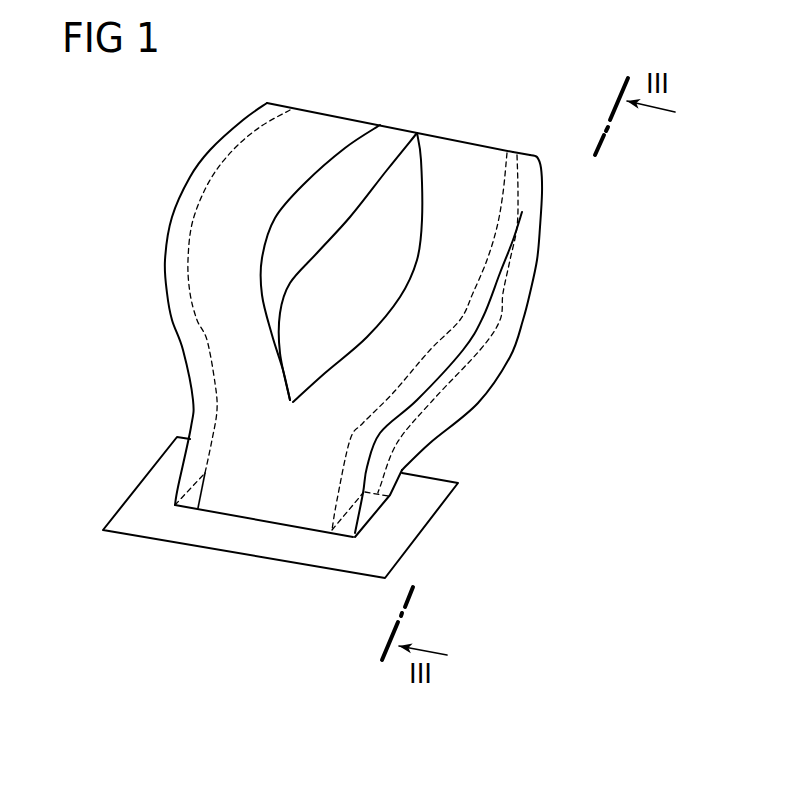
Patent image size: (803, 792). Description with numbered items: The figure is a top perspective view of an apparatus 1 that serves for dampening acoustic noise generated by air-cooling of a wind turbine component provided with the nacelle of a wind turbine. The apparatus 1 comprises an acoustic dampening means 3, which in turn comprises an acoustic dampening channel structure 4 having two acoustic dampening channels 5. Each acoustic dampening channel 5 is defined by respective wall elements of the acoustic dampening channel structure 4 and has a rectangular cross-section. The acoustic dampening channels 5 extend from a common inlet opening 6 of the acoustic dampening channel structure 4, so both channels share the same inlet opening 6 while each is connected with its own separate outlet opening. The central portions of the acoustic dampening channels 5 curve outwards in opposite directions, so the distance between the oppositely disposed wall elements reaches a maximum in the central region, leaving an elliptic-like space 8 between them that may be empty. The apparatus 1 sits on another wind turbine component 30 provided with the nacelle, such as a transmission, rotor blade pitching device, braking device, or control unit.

The apparatus 1 is at (130, 304).
The acoustic dampening means 3 is at (200, 187).
The acoustic dampening channel structure 4 is at (423, 103).
The acoustic dampening channel 5 is at (255, 173).
The inlet opening 6 is at (320, 545).
The elliptic-like space 8 is at (367, 278).
The wind turbine component 30 is at (398, 530).